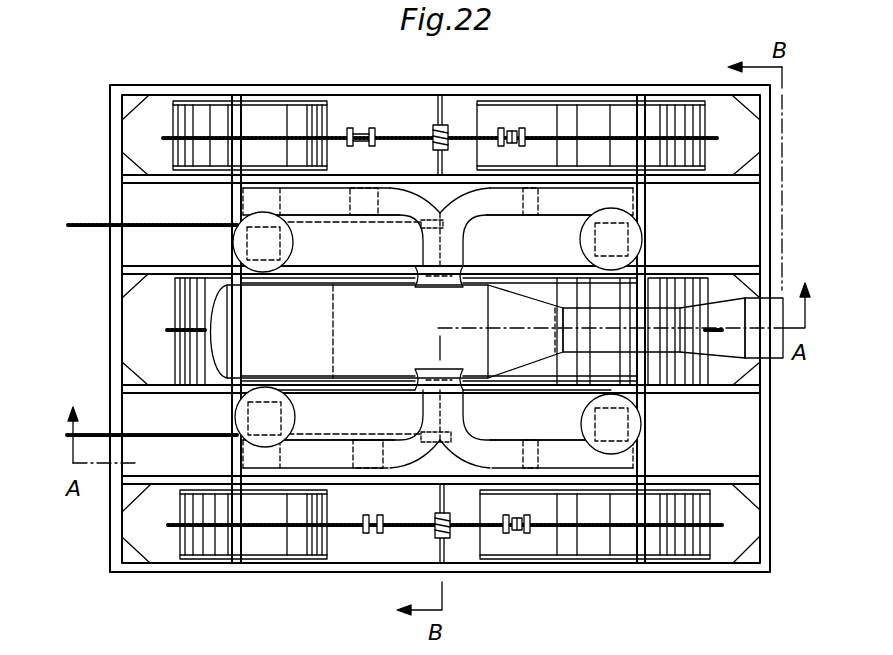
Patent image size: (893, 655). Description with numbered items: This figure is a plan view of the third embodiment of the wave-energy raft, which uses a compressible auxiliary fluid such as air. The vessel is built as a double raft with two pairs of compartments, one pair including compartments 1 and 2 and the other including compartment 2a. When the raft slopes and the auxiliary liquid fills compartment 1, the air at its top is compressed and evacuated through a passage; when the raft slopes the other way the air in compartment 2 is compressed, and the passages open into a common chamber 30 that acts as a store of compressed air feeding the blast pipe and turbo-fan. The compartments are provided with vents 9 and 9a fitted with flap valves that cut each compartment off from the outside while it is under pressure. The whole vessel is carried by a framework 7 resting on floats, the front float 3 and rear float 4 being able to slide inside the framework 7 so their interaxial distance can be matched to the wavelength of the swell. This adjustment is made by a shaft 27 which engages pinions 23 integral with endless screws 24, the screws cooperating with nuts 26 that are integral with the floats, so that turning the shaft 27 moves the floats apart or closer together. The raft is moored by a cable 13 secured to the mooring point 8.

The compartment 1 is at (250, 200).
The compartment 2 is at (710, 203).
The compartment 2a is at (565, 422).
The front float 3 is at (208, 559).
The rear float 4 is at (605, 555).
The framework 7 is at (770, 443).
The mooring point 8 is at (452, 220).
The vent 9 is at (240, 243).
The vent 9a is at (233, 420).
The cable 13 is at (92, 230).
The pinion 23 is at (450, 124).
The endless screw 24 is at (403, 133).
The nut 26 is at (362, 130).
The shaft 27 is at (446, 550).
The chamber 30 is at (497, 331).